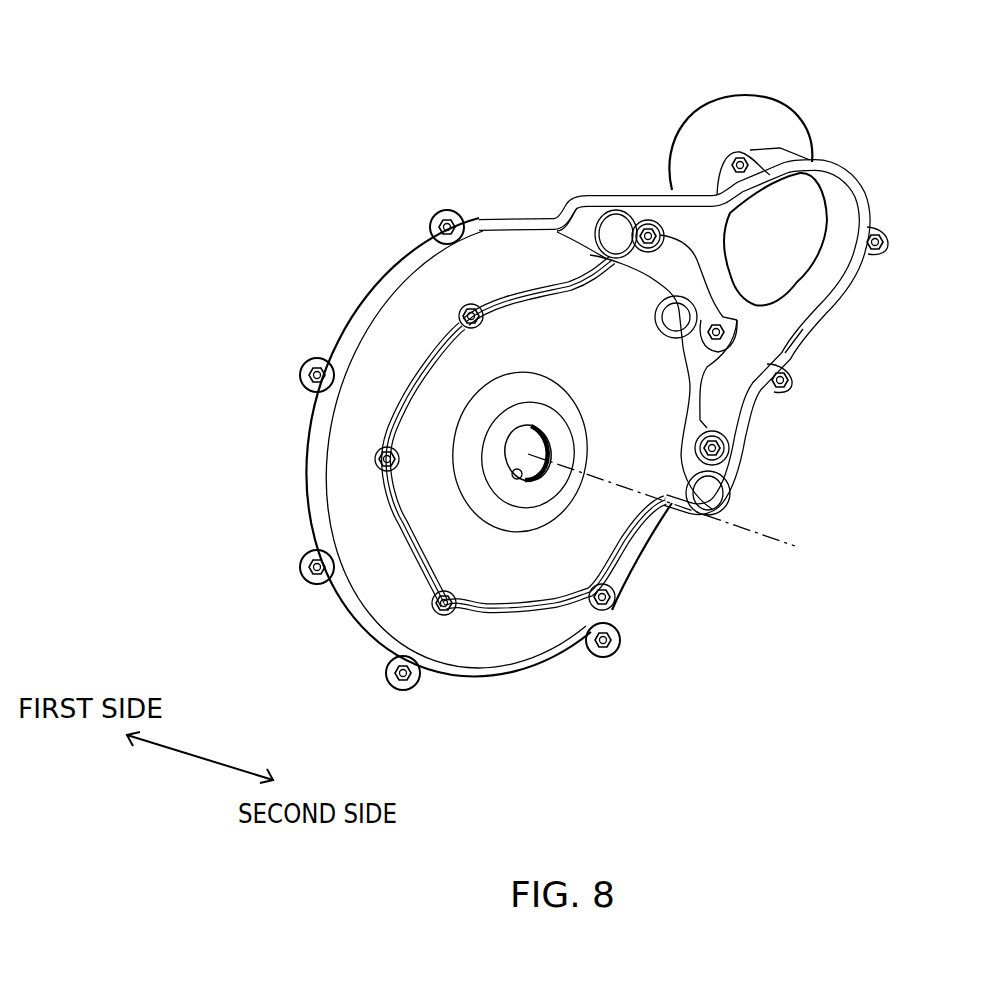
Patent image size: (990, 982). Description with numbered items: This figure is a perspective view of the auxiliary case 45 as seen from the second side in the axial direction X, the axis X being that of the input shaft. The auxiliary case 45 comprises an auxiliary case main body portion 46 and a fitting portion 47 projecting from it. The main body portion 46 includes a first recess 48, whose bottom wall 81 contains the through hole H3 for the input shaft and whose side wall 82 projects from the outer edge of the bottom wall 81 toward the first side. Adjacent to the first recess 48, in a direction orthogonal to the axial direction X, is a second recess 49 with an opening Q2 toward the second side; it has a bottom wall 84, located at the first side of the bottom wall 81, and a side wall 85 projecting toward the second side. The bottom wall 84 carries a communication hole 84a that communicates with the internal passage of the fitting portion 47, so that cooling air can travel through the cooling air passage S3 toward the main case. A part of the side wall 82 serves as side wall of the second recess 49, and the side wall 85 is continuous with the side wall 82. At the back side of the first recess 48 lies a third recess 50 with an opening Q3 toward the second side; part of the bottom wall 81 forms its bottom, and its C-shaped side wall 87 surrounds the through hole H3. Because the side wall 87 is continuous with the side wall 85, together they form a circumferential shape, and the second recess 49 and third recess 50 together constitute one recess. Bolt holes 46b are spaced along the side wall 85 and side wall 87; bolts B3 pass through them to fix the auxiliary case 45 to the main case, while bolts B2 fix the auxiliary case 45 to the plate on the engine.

The auxiliary case 45 is at (372, 252).
The auxiliary case main body portion 46 is at (562, 200).
The bolt holes 46b is at (480, 290).
The fitting portion 47 is at (748, 112).
The first recess 48 is at (382, 355).
The second recess 49 is at (817, 295).
The third recess 50 is at (517, 583).
The bottom wall 81 is at (437, 553).
The side wall 82 is at (340, 475).
The bottom wall 84 is at (690, 230).
The communication hole 84a is at (803, 221).
The side wall 85 is at (733, 410).
The side wall 87 is at (640, 555).
The bolts B2 is at (313, 583).
The bolts B3 is at (377, 453).
The through hole H3 is at (517, 485).
The opening Q2 is at (790, 323).
The opening Q3 is at (555, 573).
The cooling air passage S3 is at (773, 350).
The axis X is at (766, 546).